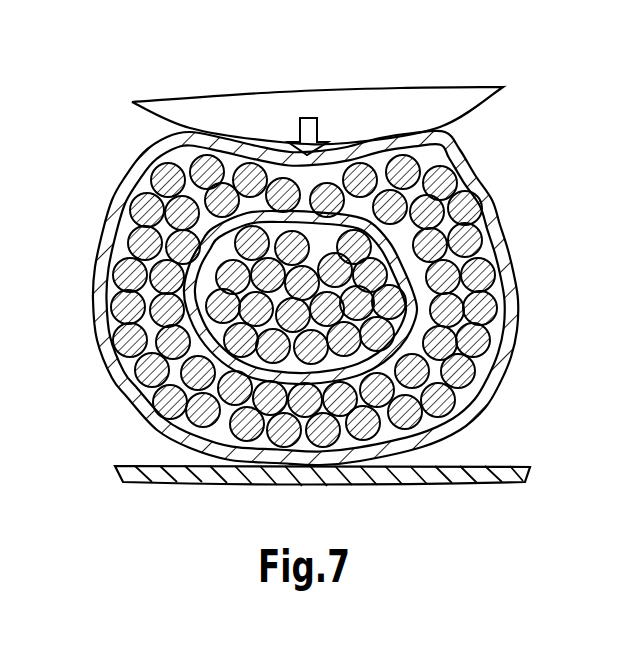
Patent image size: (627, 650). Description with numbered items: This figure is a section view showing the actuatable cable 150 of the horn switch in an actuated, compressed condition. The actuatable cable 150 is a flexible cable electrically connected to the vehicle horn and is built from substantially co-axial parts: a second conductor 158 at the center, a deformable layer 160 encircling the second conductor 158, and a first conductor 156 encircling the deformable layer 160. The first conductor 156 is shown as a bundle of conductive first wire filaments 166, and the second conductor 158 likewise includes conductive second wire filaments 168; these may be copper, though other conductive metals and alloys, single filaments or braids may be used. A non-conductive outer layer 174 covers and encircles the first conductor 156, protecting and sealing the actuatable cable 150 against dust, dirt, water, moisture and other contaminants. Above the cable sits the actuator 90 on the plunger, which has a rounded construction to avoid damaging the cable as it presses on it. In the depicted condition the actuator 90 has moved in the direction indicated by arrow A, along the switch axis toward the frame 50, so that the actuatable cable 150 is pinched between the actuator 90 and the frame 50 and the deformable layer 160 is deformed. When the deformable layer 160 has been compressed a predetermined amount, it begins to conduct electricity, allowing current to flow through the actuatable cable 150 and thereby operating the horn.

The actuator 90 is at (190, 86).
The applied force direction A is at (298, 120).
The actuatable cable 150 is at (333, 293).
The first conductor 156 is at (502, 214).
The second conductor 158 is at (218, 418).
The deformable layer 160 is at (470, 150).
The first wire filaments 166 is at (500, 304).
The second wire filaments 168 is at (128, 408).
The non-conductive outer layer 174 is at (409, 446).
The frame 50 is at (485, 458).